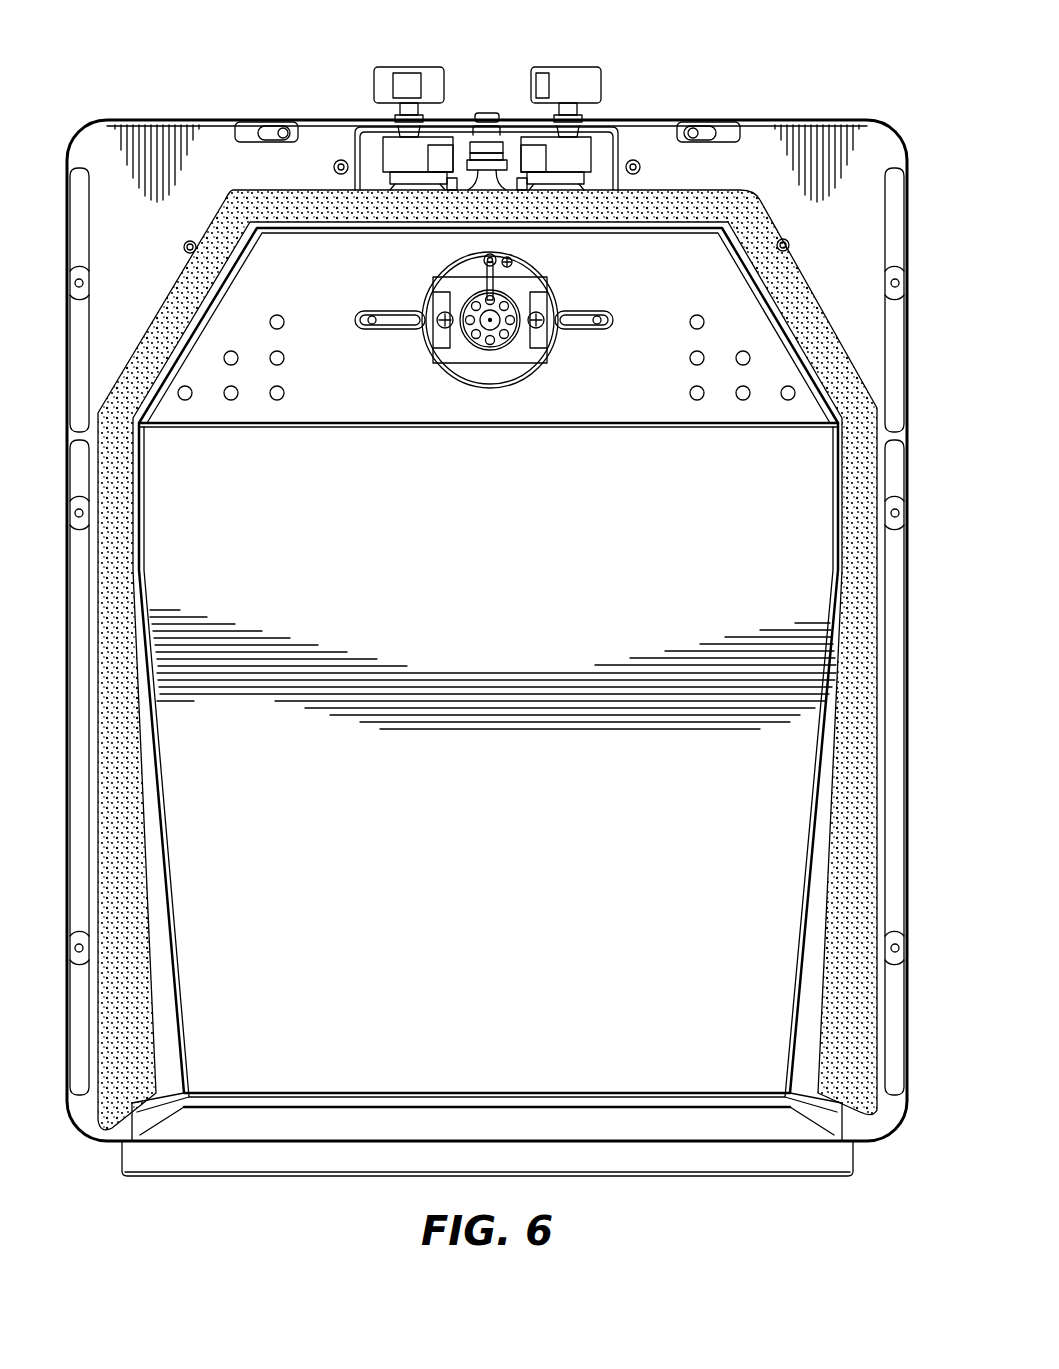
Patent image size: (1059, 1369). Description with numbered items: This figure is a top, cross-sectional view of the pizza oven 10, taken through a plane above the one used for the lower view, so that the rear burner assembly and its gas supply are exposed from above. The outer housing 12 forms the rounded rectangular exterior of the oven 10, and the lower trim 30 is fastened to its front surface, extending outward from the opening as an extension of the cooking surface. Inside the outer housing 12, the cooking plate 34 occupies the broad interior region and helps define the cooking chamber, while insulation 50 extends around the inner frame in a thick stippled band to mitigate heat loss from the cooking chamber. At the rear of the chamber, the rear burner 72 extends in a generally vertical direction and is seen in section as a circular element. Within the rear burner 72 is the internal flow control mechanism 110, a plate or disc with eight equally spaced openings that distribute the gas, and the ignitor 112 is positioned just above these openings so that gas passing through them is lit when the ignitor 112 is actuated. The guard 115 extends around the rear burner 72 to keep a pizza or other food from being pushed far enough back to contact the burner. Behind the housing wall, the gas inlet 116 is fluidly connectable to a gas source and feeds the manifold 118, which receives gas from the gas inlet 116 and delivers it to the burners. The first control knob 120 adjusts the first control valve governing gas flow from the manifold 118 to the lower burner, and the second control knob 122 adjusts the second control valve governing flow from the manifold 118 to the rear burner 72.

The oven 10 is at (135, 57).
The outer housing 12 is at (907, 905).
The lower trim 30 is at (748, 1162).
The cooking plate 34 is at (358, 1065).
The insulation 50 is at (857, 775).
The rear burner 72 is at (470, 348).
The internal flow control mechanism 110 is at (497, 338).
The ignitor 112 is at (513, 277).
The guard 115 is at (420, 340).
The gas inlet 116 is at (483, 113).
The manifold 118 is at (500, 178).
The first control knob 120 is at (585, 78).
The second control knob 122 is at (388, 67).